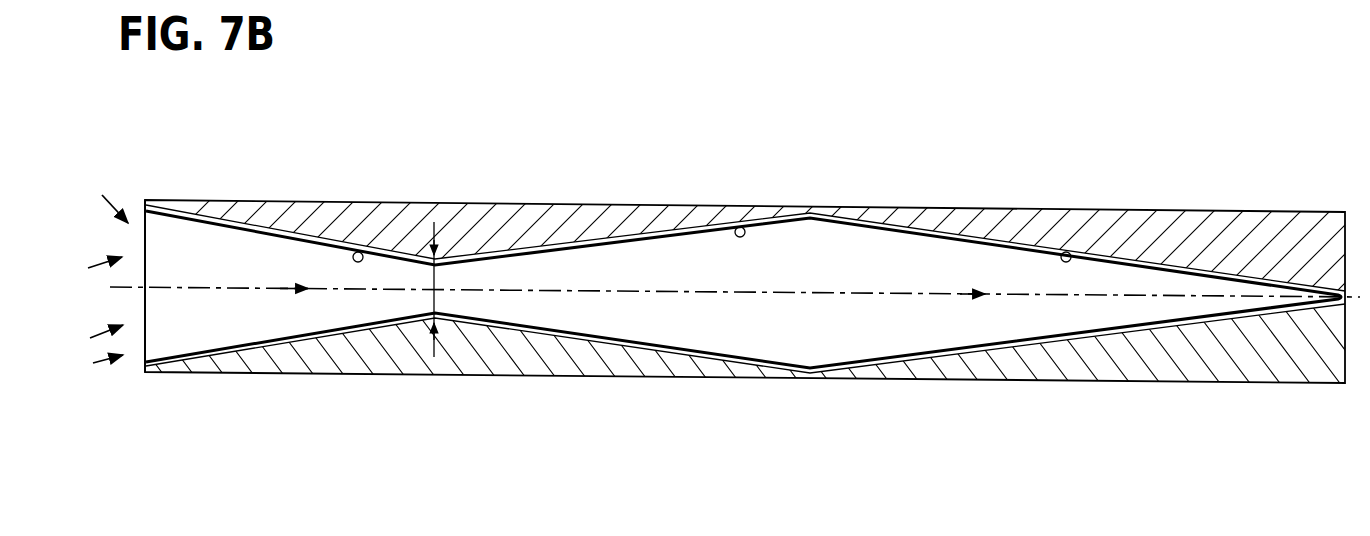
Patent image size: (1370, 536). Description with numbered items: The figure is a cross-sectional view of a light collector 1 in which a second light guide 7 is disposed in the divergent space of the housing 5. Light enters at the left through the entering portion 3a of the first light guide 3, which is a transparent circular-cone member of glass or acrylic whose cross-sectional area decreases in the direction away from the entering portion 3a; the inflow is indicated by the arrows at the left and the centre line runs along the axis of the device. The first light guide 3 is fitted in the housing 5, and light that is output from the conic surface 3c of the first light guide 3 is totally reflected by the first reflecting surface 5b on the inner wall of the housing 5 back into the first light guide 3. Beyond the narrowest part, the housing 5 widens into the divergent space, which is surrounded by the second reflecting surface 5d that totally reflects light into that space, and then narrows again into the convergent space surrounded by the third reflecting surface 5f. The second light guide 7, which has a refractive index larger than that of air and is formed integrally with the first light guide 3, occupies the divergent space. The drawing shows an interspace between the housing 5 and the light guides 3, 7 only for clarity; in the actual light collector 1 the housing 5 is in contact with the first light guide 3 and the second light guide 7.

The light collector 1 is at (308, 124).
The first light guide 3 is at (215, 250).
The entering portion 3a is at (172, 310).
The conic surface 3c is at (358, 252).
The housing 5 is at (1025, 202).
The first reflecting surface 5b is at (405, 255).
The second reflecting surface 5d is at (740, 227).
The third reflecting surface 5f is at (1067, 252).
The second light guide 7 is at (648, 258).